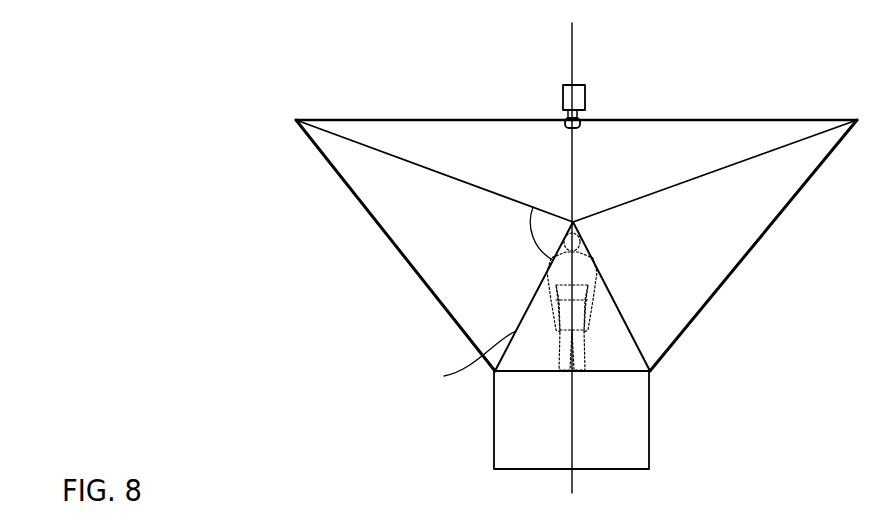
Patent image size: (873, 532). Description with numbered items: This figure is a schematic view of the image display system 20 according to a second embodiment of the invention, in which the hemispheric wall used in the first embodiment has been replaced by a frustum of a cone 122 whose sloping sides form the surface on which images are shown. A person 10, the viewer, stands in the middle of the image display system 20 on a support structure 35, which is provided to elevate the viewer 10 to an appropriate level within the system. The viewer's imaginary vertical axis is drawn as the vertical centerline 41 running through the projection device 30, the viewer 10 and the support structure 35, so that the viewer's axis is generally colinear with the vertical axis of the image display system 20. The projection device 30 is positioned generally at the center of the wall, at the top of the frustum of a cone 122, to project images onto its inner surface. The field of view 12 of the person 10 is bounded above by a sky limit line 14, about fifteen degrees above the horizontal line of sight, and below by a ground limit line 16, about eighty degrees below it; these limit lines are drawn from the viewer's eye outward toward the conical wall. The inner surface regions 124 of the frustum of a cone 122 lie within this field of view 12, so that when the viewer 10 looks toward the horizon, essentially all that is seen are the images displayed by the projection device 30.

The person 10 is at (593, 249).
The field of view 12 is at (545, 258).
The sky limit line 14 is at (453, 177).
The ground limit line 16 is at (464, 359).
The image display system 20 is at (669, 361).
The projection device 30 is at (598, 111).
The support structure 35 is at (618, 448).
The vertical axis 41 is at (572, 48).
The frustum of a cone 122 is at (455, 322).
The detection region 124 is at (407, 246).